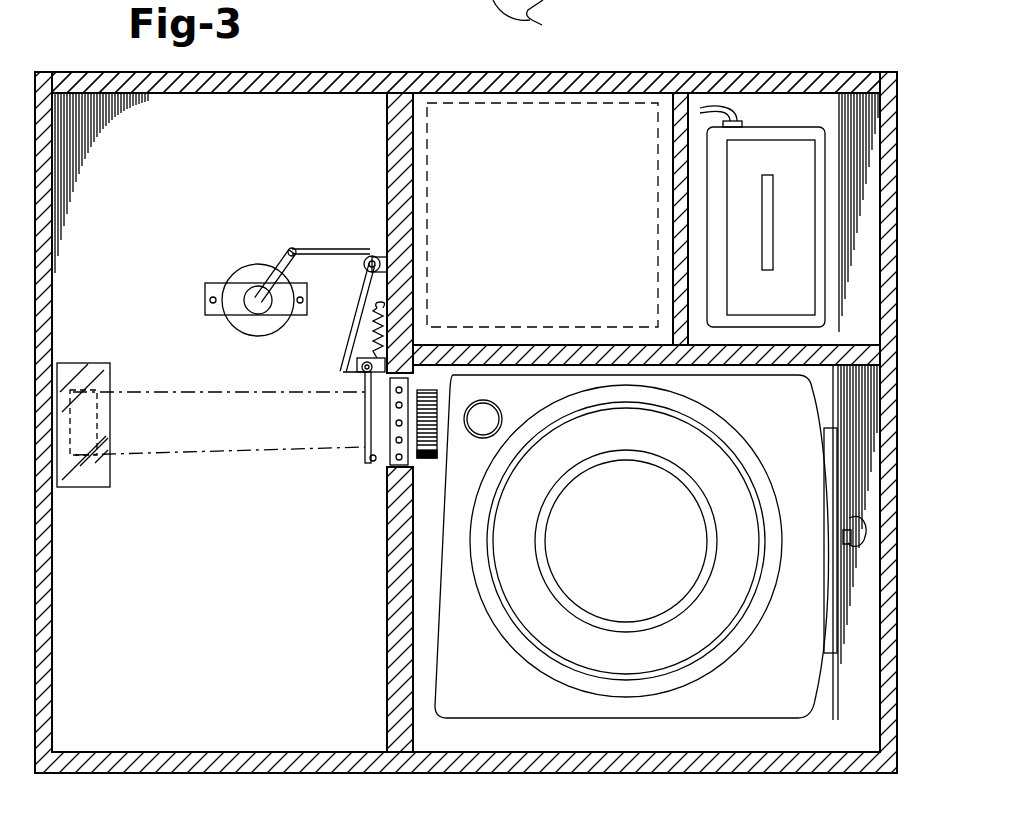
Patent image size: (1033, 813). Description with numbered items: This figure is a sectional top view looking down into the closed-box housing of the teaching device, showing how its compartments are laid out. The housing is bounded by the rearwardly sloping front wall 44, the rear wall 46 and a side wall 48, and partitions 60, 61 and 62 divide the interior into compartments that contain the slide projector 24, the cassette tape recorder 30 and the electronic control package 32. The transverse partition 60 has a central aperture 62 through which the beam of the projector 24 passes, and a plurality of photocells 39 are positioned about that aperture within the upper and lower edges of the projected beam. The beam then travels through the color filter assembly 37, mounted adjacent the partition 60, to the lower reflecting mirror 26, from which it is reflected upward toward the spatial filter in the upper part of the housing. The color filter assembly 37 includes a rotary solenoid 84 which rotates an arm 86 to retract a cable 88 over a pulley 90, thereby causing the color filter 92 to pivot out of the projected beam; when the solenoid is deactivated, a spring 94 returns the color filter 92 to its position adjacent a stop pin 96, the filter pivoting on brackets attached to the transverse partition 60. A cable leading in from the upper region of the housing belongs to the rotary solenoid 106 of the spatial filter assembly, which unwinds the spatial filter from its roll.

The slide projector 24 is at (801, 683).
The lower reflecting mirror 26 is at (90, 365).
The cassette tape recorder 30 is at (777, 127).
The electronic control package 32 is at (547, 113).
The color filter assembly 37 is at (279, 225).
The photocells 39 is at (432, 380).
The front wall 44 is at (898, 415).
The rear wall 46 is at (35, 574).
The side wall 48 is at (360, 72).
The transverse partition 60 is at (413, 283).
The partition 61 is at (675, 221).
The aperture 62 is at (580, 343).
The rotary solenoid 84 is at (243, 268).
The arm 86 is at (281, 257).
The cable 88 is at (332, 251).
The pulley 90 is at (363, 278).
The color filter 92 is at (363, 387).
The spring 94 is at (372, 335).
The stop pin 96 is at (373, 460).
The rotary solenoid 106 is at (541, 19).